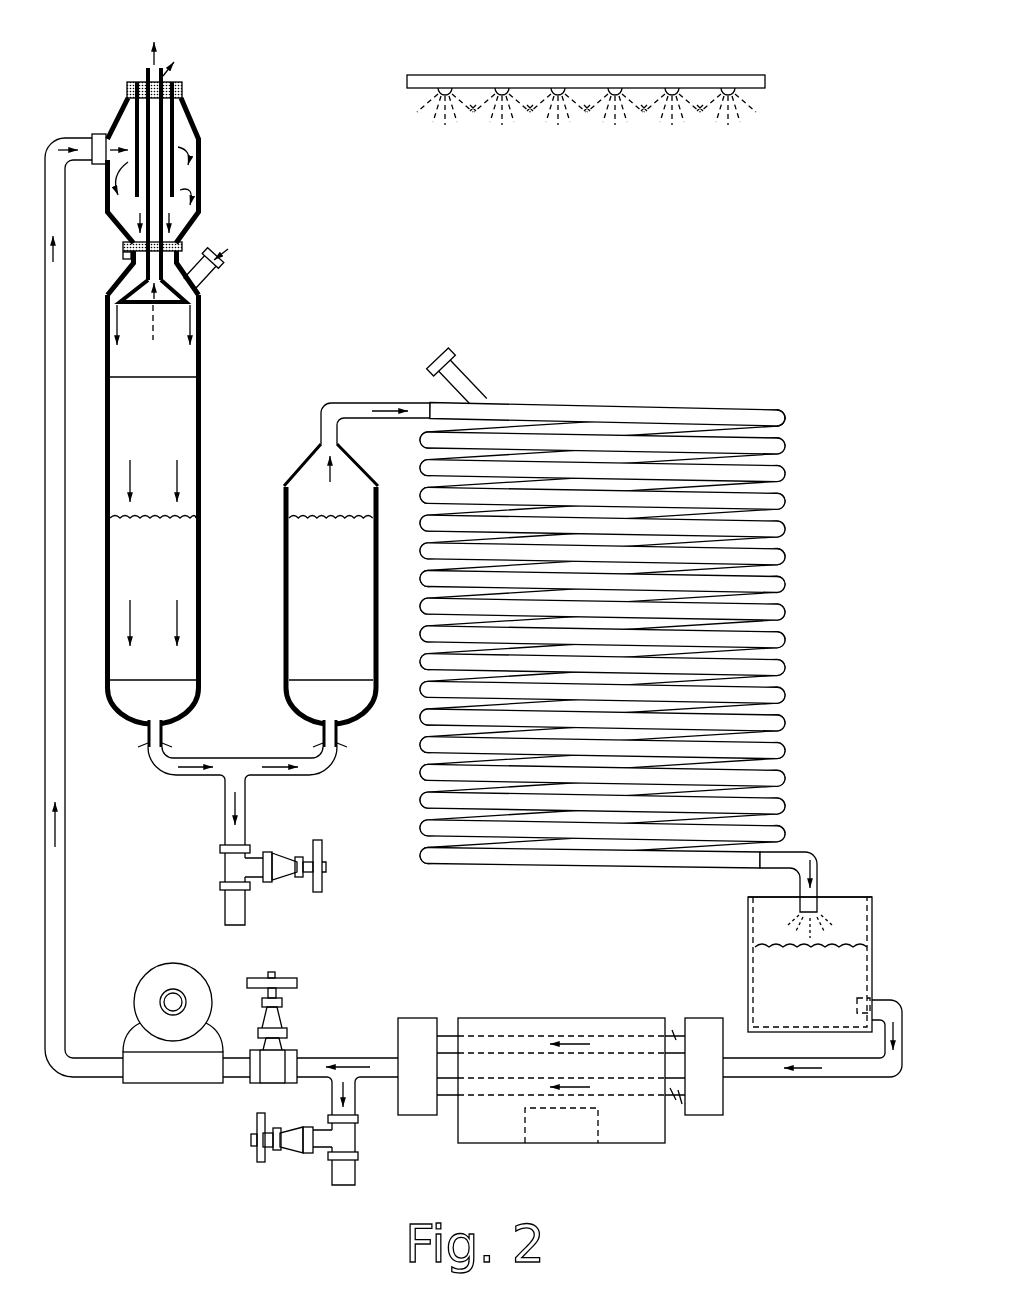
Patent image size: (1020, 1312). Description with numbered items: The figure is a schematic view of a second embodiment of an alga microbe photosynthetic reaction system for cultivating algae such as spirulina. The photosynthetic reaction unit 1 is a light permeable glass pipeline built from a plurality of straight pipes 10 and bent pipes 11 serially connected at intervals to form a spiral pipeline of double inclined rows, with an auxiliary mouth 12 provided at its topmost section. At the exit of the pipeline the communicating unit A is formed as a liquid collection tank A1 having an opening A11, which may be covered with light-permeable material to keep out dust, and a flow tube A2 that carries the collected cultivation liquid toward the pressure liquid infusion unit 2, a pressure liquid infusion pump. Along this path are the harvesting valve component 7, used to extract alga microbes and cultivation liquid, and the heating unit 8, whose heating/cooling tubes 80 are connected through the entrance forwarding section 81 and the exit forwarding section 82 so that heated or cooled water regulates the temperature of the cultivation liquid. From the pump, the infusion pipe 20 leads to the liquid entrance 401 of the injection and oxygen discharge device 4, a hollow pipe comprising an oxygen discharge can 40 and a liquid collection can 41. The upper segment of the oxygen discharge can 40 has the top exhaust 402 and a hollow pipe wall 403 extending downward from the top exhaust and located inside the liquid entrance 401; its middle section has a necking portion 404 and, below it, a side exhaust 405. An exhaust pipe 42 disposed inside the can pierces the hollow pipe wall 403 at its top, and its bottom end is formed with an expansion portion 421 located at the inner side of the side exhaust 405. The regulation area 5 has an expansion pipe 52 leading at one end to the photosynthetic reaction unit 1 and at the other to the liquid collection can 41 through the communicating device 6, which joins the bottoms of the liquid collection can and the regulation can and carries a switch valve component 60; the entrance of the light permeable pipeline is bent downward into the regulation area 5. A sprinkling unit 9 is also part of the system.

The photosynthetic reaction unit 1 is at (611, 579).
The straight pipes 10 is at (720, 416).
The bent pipes 11 is at (782, 409).
The auxiliary mouth 12 is at (470, 382).
The pressure liquid infusion unit 2 is at (178, 968).
The infusion pipe 20 is at (62, 932).
The injection and oxygen discharge device 4 is at (209, 151).
The oxygen discharge can 40 is at (200, 167).
The liquid entrance 401 is at (101, 157).
The top exhaust 402 is at (137, 78).
The hollow pipe wall 403 is at (178, 132).
The necking portion 404 is at (173, 246).
The side exhaust 405 is at (230, 255).
The liquid collection can 41 is at (203, 490).
The exhaust pipe 42 is at (133, 200).
The expansion portion 421 is at (131, 288).
The regulation area 5 is at (389, 516).
The expansion pipe 52 is at (284, 548).
The communicating device 6 is at (318, 776).
The switch valve component 60 is at (284, 880).
The harvesting valve component 7 is at (255, 1140).
The heating unit 8 is at (571, 1041).
The heating/cooling tubes 80 is at (628, 1040).
The entrance forwarding section 81 is at (704, 1030).
The exit forwarding section 82 is at (420, 1018).
The sprinkling unit 9 is at (597, 80).
The communicating unit A is at (784, 970).
The liquid collection tank A1 is at (870, 930).
The opening A11 is at (843, 895).
The flow tube A2 is at (880, 1078).